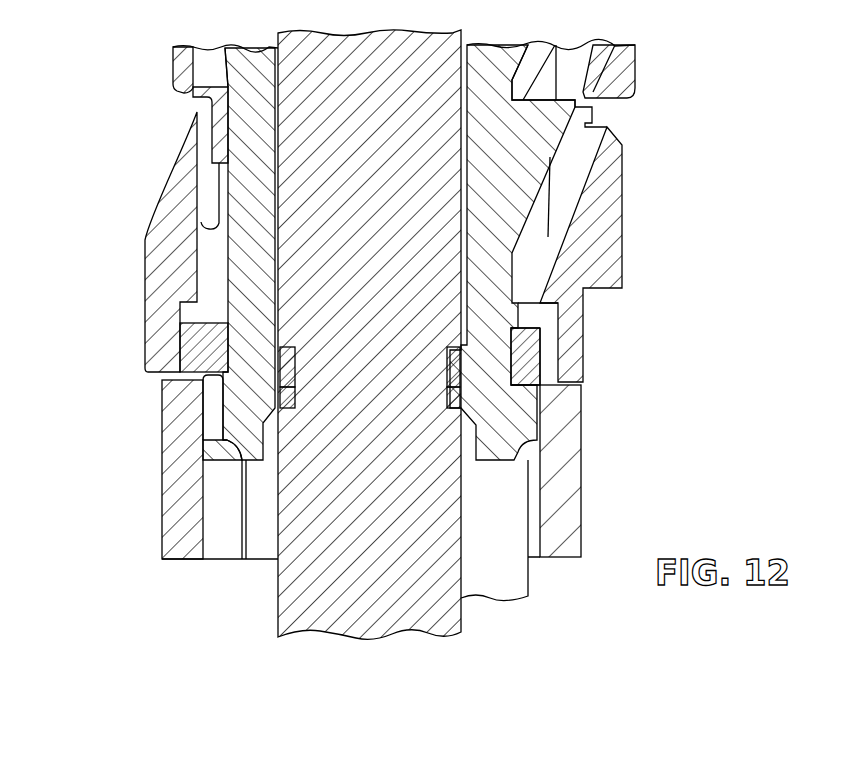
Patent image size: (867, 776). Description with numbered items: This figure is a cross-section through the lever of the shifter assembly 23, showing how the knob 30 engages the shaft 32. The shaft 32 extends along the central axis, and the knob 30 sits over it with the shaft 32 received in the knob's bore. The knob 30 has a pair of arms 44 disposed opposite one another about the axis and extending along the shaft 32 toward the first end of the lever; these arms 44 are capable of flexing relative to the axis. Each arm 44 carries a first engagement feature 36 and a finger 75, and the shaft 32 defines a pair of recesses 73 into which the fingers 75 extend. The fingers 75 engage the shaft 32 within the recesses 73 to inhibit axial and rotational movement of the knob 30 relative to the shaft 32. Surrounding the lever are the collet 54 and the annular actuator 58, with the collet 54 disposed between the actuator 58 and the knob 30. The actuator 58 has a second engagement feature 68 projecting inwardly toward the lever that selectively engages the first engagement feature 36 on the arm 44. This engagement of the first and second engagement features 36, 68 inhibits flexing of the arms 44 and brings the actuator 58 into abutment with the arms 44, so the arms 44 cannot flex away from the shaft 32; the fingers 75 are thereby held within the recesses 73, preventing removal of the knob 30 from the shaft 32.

The shifter assembly 23 is at (113, 128).
The knob 30 is at (632, 66).
The shaft 32 is at (460, 627).
The first engagement feature 36 is at (200, 417).
The arm 44 is at (250, 284).
The collet 54 is at (602, 187).
The actuator 58 is at (560, 455).
The second engagement feature 68 is at (222, 378).
The recess 73 is at (285, 408).
The finger 75 is at (283, 373).